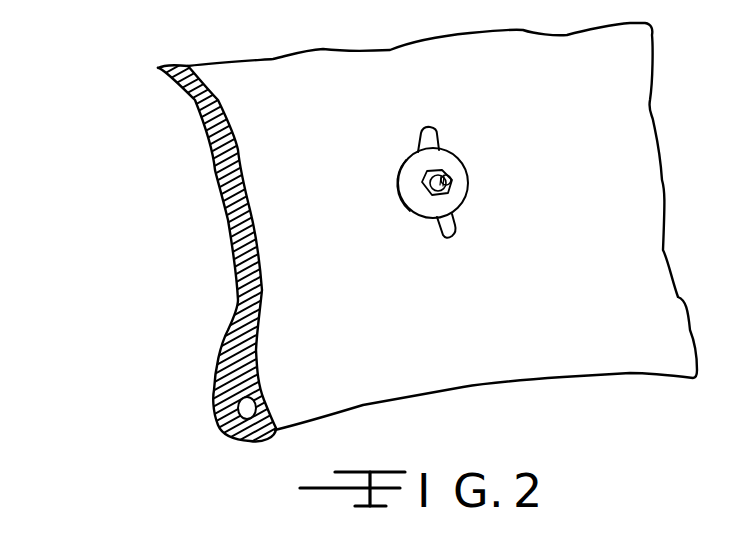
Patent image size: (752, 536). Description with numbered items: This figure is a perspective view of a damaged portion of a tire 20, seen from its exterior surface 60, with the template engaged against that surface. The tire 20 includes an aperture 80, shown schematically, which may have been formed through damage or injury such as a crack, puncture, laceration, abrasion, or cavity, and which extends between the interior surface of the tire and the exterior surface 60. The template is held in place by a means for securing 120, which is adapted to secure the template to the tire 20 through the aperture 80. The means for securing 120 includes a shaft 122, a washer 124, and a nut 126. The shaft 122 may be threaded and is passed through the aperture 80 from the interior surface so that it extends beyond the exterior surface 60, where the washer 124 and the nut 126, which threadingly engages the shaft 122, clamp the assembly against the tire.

The tire 20 is at (180, 231).
The exterior surface 60 is at (448, 331).
The aperture 80 is at (436, 227).
The means for securing 120 is at (426, 186).
The shaft 122 is at (423, 177).
The washer 124 is at (461, 187).
The nut 126 is at (448, 192).